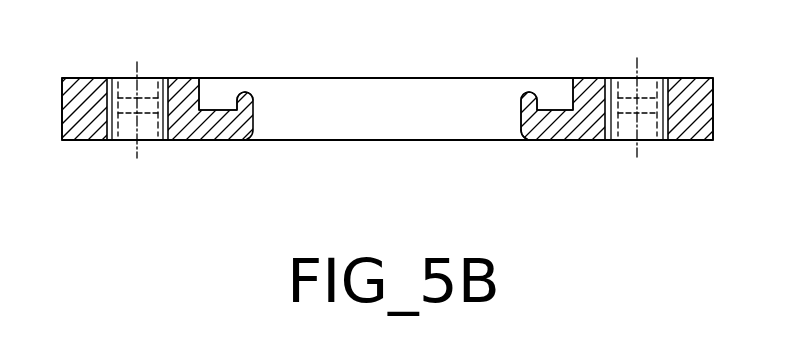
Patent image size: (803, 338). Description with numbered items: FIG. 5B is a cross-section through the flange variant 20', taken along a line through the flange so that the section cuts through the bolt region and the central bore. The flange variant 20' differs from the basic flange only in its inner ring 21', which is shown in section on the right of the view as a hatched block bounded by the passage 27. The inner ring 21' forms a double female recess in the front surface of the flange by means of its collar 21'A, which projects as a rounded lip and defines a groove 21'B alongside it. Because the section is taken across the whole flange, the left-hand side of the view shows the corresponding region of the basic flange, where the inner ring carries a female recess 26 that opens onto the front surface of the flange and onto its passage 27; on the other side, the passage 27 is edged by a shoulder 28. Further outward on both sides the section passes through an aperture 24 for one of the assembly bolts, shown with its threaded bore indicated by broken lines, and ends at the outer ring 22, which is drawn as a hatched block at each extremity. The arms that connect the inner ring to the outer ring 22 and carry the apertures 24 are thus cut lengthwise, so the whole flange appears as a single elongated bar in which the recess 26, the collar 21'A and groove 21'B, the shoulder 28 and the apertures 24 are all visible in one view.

The outer ring 22 is at (90, 80).
The aperture 24 is at (655, 90).
The female recess 26 is at (222, 105).
The passage 27 is at (302, 100).
The shoulder 28 is at (217, 130).
The flange variant 20' is at (563, 168).
The inner ring 21' is at (567, 142).
The collar 21'A is at (496, 72).
The groove 21'B is at (575, 62).